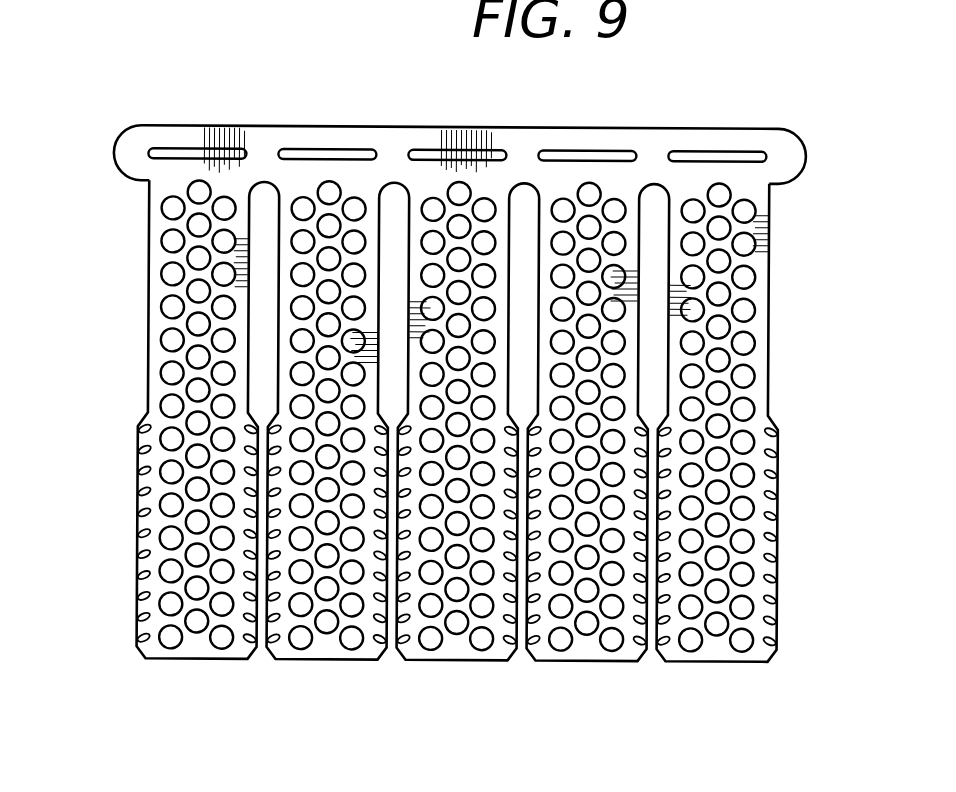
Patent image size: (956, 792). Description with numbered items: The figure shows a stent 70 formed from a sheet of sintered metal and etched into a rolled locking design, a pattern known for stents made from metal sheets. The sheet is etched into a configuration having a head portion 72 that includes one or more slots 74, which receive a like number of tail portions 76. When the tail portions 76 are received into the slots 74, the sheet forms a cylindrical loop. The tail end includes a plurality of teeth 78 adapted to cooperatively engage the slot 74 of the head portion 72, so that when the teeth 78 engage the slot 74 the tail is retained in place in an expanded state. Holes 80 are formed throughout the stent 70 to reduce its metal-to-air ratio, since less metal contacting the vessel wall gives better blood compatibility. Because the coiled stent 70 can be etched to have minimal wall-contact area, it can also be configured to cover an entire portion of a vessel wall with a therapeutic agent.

The stent 70 is at (110, 358).
The head portion 72 is at (104, 158).
The slots 74 is at (190, 151).
The tail portions 76 is at (194, 672).
The teeth 78 is at (137, 502).
The holes 80 is at (161, 569).